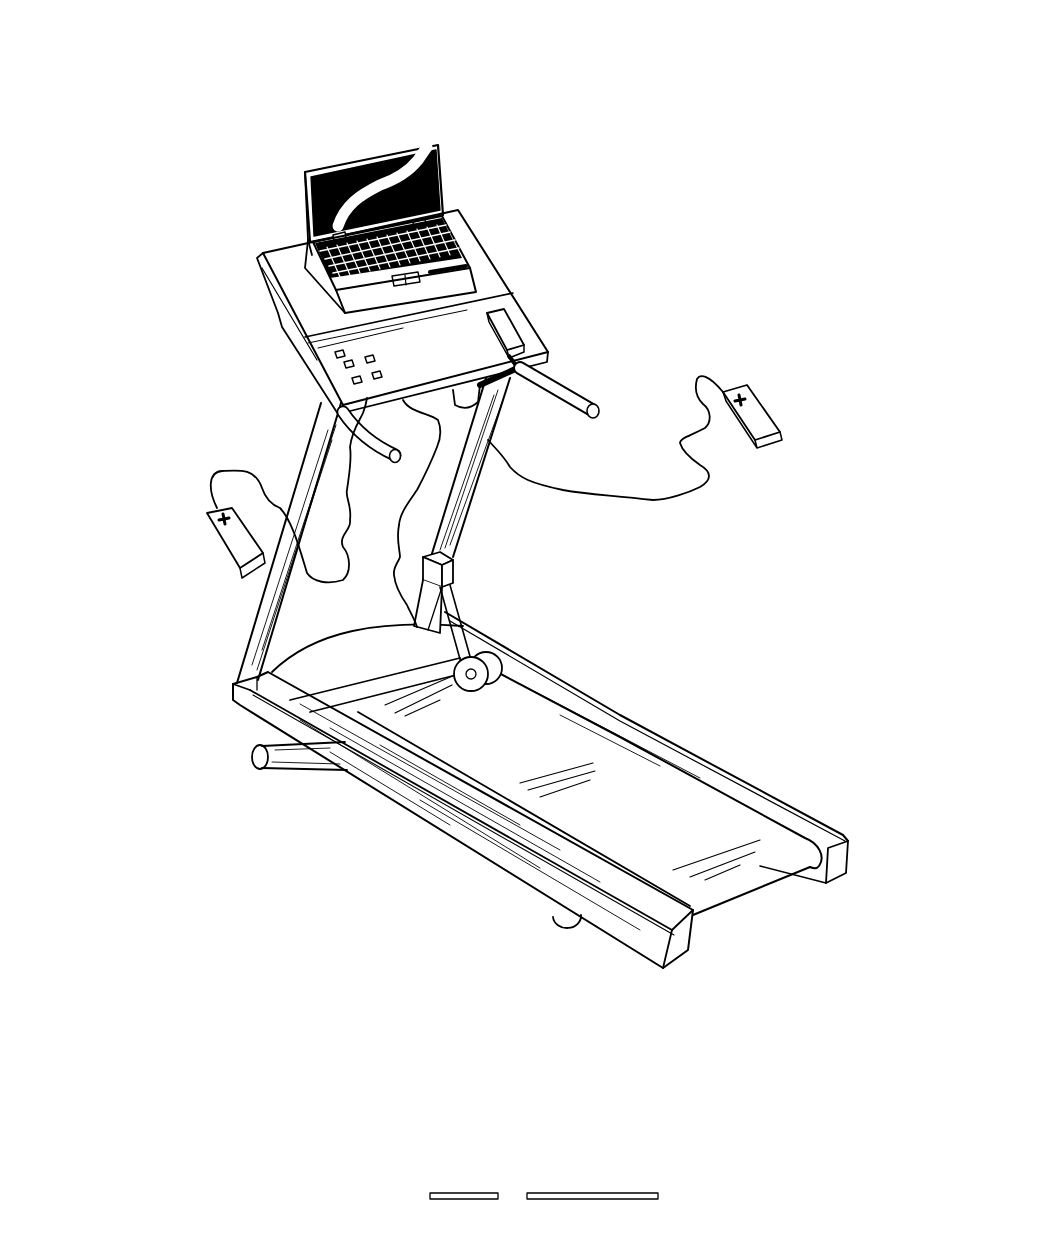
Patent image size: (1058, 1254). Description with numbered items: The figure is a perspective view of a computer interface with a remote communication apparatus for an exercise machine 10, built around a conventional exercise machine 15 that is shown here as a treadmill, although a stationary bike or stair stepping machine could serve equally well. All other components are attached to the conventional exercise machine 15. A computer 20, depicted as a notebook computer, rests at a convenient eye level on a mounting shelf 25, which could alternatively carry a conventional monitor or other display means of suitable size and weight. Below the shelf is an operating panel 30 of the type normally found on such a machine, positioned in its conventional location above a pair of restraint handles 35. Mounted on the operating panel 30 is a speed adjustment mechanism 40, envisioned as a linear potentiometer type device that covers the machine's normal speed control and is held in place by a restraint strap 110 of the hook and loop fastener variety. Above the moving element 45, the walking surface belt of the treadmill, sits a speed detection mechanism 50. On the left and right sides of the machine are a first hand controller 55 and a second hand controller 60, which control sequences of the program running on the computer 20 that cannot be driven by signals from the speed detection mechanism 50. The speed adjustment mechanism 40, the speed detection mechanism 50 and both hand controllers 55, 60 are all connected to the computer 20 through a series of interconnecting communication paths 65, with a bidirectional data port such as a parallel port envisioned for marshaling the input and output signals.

The computer interface with a remote communication apparatus for an exercise machine 10 is at (237, 997).
The conventional exercise machine 15 is at (680, 752).
The computer 20 is at (412, 148).
The mounting shelf 25 is at (480, 258).
The operating panel 30 is at (385, 368).
The restraint handles 35 is at (580, 400).
The speed adjustment mechanism 40 is at (507, 327).
The moving element 45 is at (683, 815).
The speed detection mechanism 50 is at (465, 628).
The first hand controller 55 is at (237, 538).
The second hand controller 60 is at (763, 415).
The interconnecting communication paths 65 is at (512, 383).
The restraint strap 110 is at (533, 353).